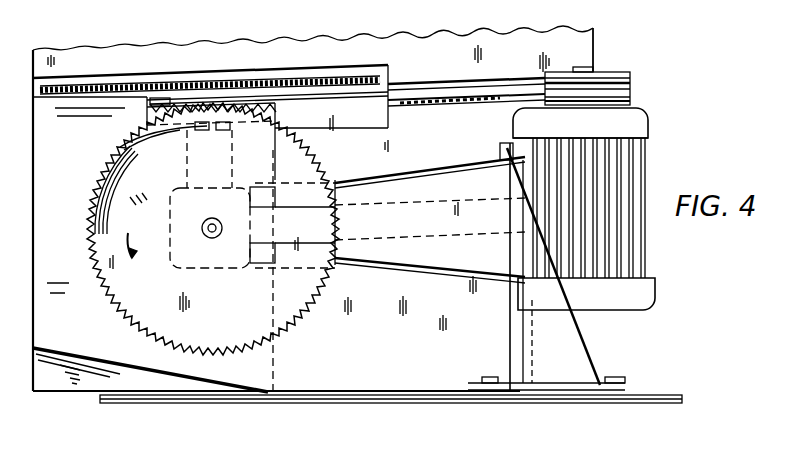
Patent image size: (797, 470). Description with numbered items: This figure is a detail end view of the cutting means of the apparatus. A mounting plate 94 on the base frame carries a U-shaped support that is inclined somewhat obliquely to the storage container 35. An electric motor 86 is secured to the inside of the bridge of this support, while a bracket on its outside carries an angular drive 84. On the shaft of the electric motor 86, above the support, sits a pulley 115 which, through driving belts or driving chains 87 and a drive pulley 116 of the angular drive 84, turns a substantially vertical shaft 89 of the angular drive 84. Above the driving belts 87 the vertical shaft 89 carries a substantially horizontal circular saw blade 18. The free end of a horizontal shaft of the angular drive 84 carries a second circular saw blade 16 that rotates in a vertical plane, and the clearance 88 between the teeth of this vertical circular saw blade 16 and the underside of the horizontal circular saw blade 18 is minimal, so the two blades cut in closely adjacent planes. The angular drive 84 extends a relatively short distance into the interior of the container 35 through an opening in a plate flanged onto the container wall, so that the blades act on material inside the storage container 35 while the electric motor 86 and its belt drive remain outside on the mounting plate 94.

The circular saw blade 16 is at (305, 156).
The circular saw blade 18 is at (302, 82).
The storage container 35 is at (598, 46).
The angular drive 84 is at (181, 254).
The electric motor 86 is at (647, 124).
The driving belts 87 is at (433, 90).
The clearance 88 is at (213, 92).
The vertical shaft 89 is at (120, 147).
The mounting plate 94 is at (540, 402).
The pulley 115 is at (565, 76).
The drive pulley 116 is at (167, 90).